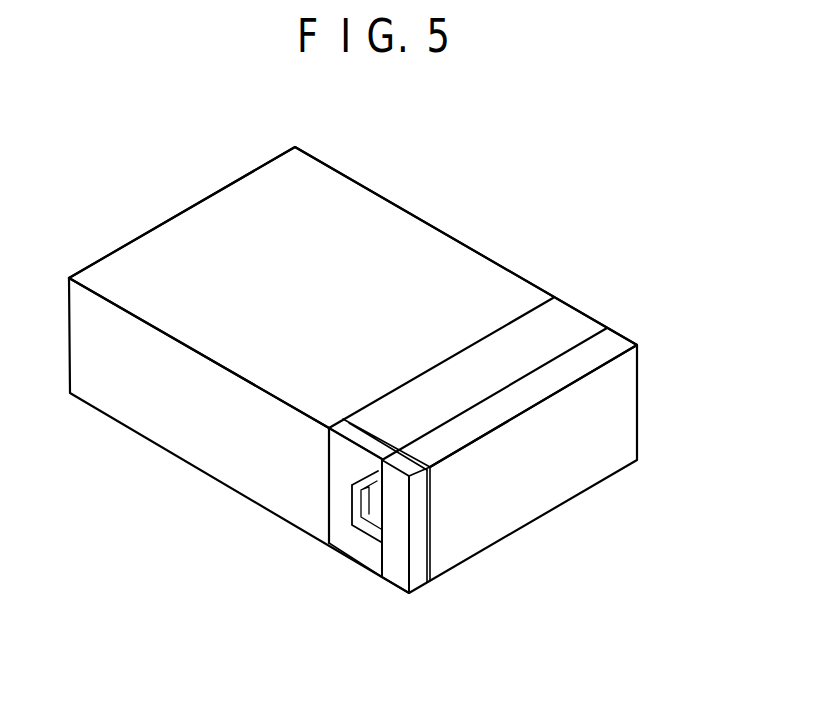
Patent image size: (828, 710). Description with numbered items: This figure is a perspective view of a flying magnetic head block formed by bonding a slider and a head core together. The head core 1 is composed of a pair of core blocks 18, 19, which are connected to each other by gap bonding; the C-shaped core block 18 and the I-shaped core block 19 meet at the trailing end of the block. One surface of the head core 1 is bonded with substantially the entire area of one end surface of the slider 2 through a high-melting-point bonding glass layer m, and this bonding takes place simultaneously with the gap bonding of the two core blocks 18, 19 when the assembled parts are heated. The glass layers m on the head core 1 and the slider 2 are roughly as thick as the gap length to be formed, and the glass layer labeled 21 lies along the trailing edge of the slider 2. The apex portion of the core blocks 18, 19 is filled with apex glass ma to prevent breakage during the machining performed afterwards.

The head core 1 is at (623, 322).
The slider 2 is at (453, 262).
The core block 18 is at (352, 546).
The core block 19 is at (395, 573).
The mark line (m) 21 is at (558, 346).
The glass layer m is at (423, 374).
The apex glass ma is at (351, 498).